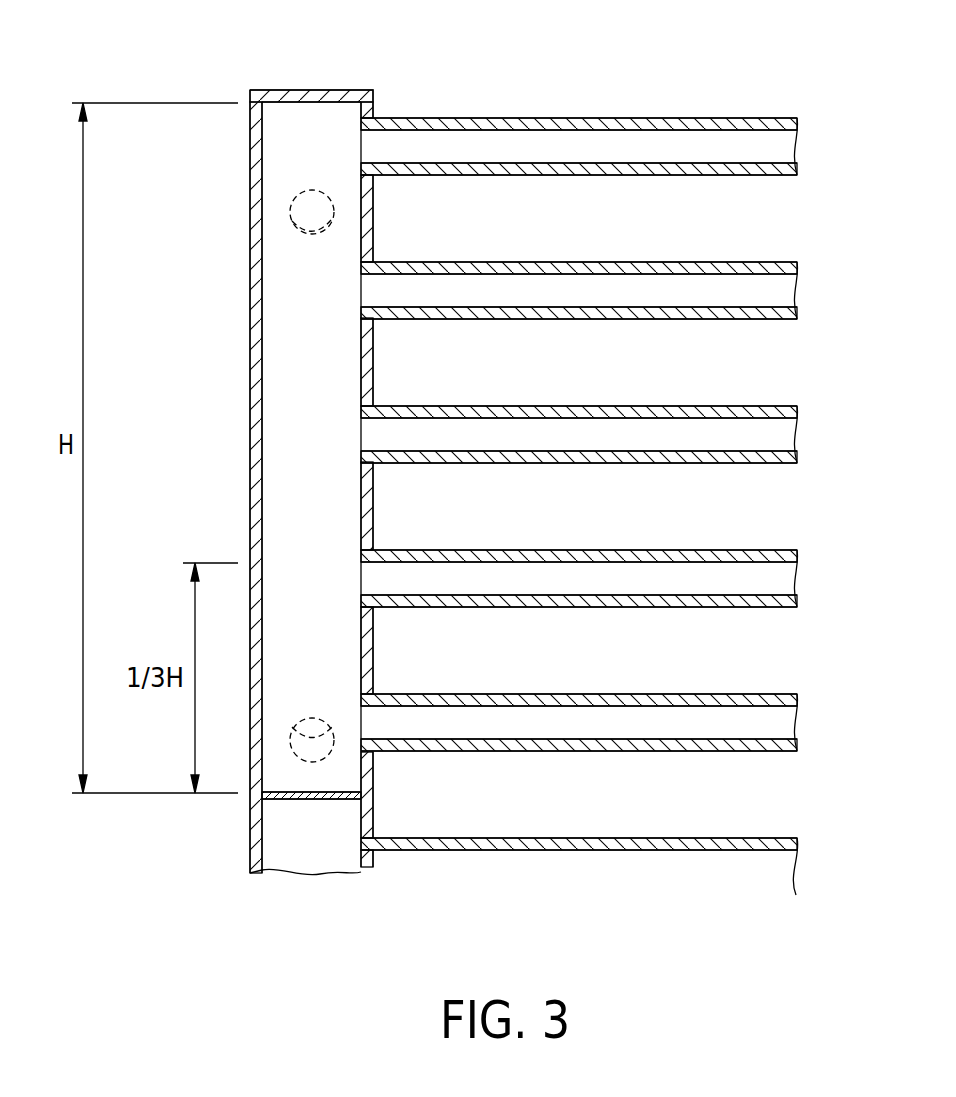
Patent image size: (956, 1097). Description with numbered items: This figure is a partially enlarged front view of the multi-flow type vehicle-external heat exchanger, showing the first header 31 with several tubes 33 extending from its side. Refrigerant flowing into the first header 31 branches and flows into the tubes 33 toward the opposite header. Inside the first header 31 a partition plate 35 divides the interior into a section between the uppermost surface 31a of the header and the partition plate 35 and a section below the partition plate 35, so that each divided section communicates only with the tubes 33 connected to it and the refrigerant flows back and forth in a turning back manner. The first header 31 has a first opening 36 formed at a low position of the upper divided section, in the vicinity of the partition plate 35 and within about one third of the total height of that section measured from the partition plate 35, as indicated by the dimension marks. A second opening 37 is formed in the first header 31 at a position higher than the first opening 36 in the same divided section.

The first header 31 is at (250, 153).
The uppermost surface 31a is at (309, 90).
The tubes 33 is at (600, 118).
The partition plate 35 is at (322, 800).
The first opening 36 is at (327, 725).
The second opening 37 is at (322, 233).